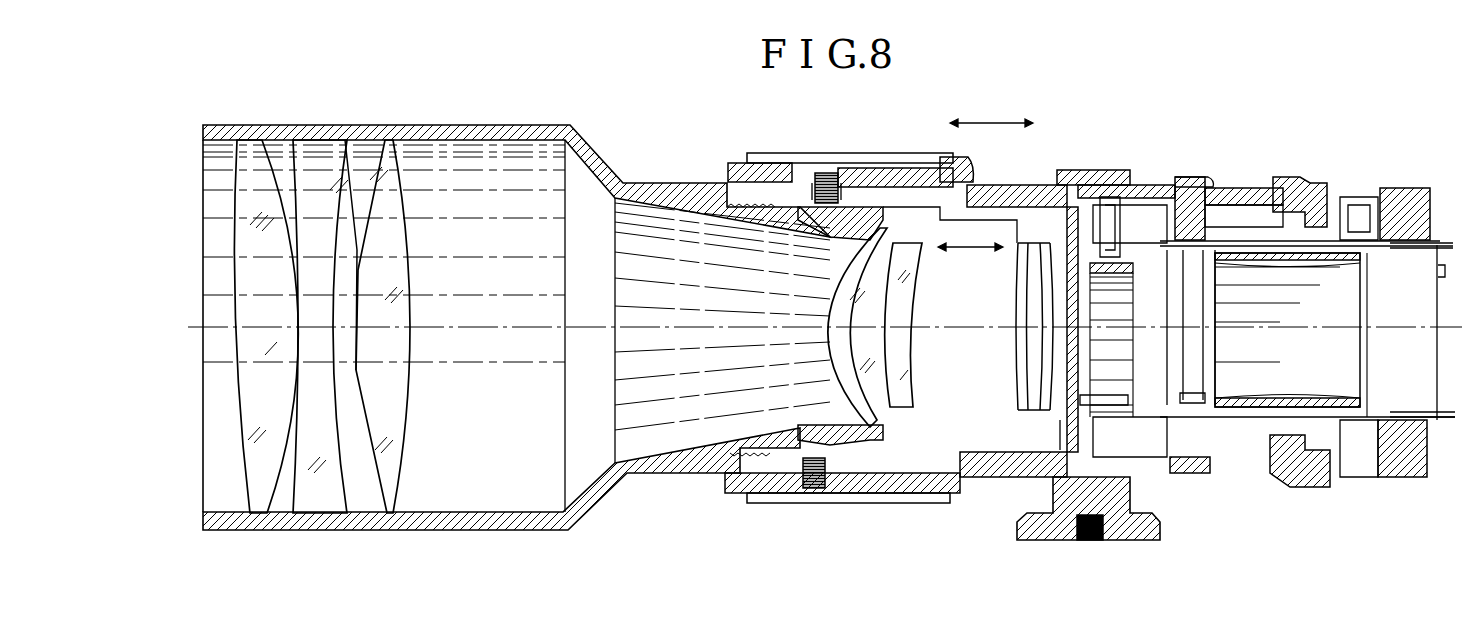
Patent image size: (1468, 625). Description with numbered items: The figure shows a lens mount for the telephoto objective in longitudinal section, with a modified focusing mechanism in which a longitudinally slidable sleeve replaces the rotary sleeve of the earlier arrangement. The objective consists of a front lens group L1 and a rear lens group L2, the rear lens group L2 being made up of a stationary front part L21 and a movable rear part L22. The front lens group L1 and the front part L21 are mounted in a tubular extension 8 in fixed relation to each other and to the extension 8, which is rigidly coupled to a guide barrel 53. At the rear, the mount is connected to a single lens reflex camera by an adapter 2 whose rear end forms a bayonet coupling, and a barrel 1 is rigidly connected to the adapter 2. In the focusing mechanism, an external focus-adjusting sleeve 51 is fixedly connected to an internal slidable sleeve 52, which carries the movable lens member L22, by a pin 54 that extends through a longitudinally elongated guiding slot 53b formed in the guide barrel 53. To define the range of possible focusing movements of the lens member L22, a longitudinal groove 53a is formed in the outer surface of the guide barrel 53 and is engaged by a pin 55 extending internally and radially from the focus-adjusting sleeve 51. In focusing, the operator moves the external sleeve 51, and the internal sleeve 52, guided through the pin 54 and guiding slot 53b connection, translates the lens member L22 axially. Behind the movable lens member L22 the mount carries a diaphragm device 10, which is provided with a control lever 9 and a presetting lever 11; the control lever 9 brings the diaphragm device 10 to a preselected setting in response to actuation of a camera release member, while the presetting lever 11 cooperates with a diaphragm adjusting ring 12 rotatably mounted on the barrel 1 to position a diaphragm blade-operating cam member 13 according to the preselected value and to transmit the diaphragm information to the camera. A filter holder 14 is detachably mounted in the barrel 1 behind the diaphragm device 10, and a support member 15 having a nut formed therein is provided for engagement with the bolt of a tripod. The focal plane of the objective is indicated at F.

The barrel 1 is at (1405, 190).
The adapter 2 is at (1386, 190).
The tubular extension 8 is at (530, 527).
The control lever 9 is at (1447, 412).
The diaphragm device 10 is at (1068, 445).
The presetting lever 11 is at (1420, 246).
The diaphragm adjusting ring 12 is at (1318, 186).
The diaphragm blade-operating cam member 13 is at (1120, 220).
The filter holder 14 is at (1195, 180).
The support member 15 is at (1155, 530).
The focus-adjusting sleeve 51 is at (783, 176).
The slidable sleeve 52 is at (897, 208).
The guide barrel 53 is at (1018, 186).
The longitudinal groove 53a is at (853, 460).
The guiding slot 53b is at (955, 196).
The pin 54 is at (820, 173).
The pin 55 is at (803, 467).
The front lens group L1 is at (318, 515).
The rear lens group L2 is at (922, 541).
The stationary front part of the rear lens group L21 is at (872, 427).
The movable rear part of the rear lens group L22 is at (908, 410).
The focal plane reticle F is at (1198, 372).